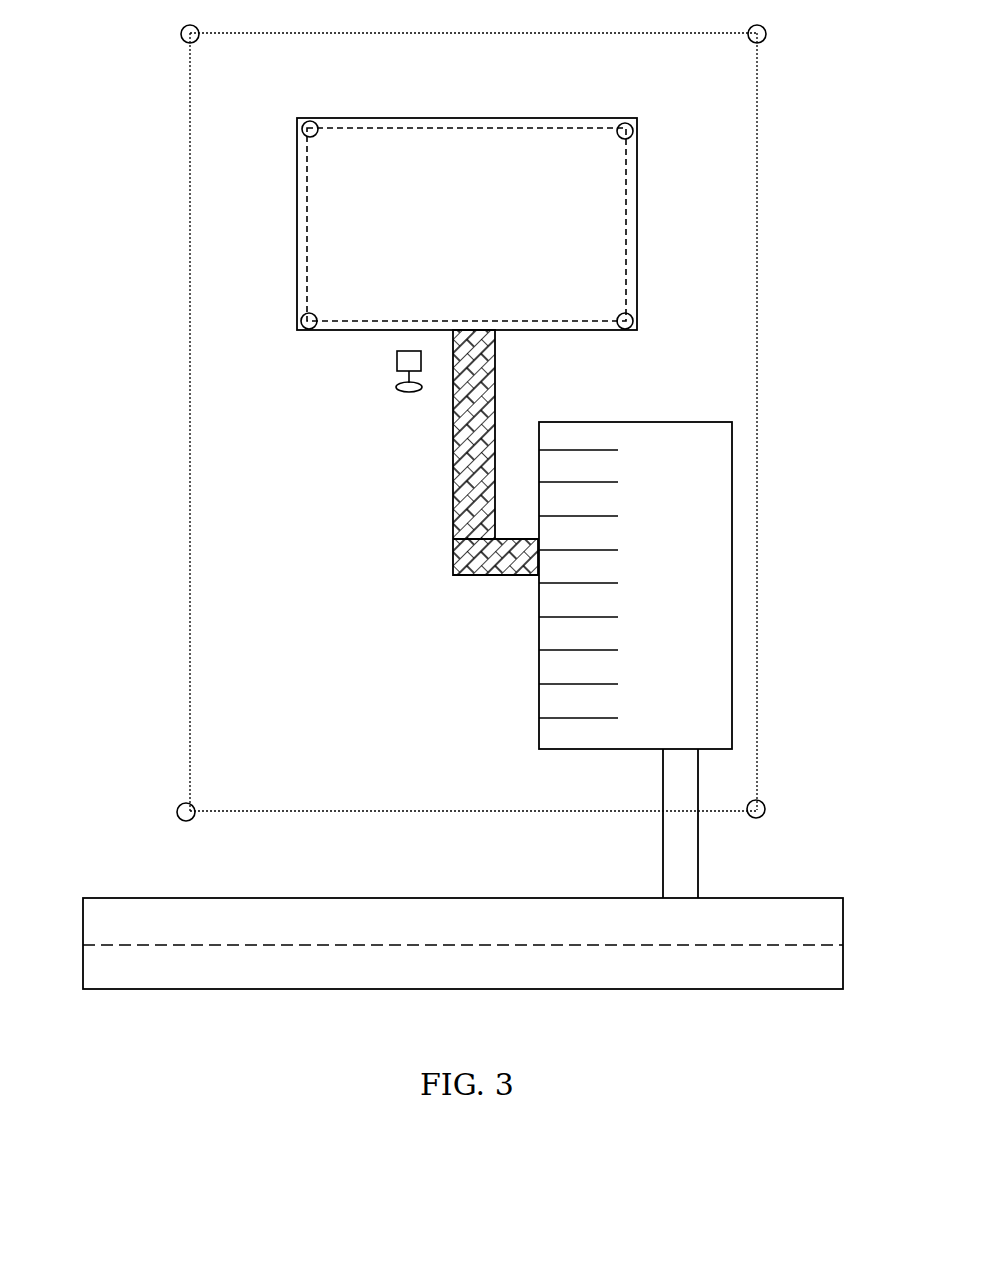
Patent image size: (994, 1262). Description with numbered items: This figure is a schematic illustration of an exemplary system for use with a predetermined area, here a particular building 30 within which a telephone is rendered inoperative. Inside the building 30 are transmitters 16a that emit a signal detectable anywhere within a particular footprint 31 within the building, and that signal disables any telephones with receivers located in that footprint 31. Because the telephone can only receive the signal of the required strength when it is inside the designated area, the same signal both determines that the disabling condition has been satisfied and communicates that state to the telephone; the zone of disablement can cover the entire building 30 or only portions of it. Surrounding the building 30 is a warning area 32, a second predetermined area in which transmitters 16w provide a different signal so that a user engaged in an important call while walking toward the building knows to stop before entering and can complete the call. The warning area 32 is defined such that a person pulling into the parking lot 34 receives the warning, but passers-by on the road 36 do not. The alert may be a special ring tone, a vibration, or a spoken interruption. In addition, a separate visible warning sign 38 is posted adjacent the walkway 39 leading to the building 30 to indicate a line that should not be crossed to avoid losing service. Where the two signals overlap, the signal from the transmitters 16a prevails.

The transmitters 16w is at (752, 814).
The transmitters 16a is at (618, 328).
The building 30 is at (637, 216).
The footprint 31 is at (626, 256).
The warning area 32 is at (320, 494).
The parking lot 34 is at (635, 660).
The road 36 is at (463, 943).
The visible warning sign 38 is at (410, 360).
The walkway 39 is at (460, 428).